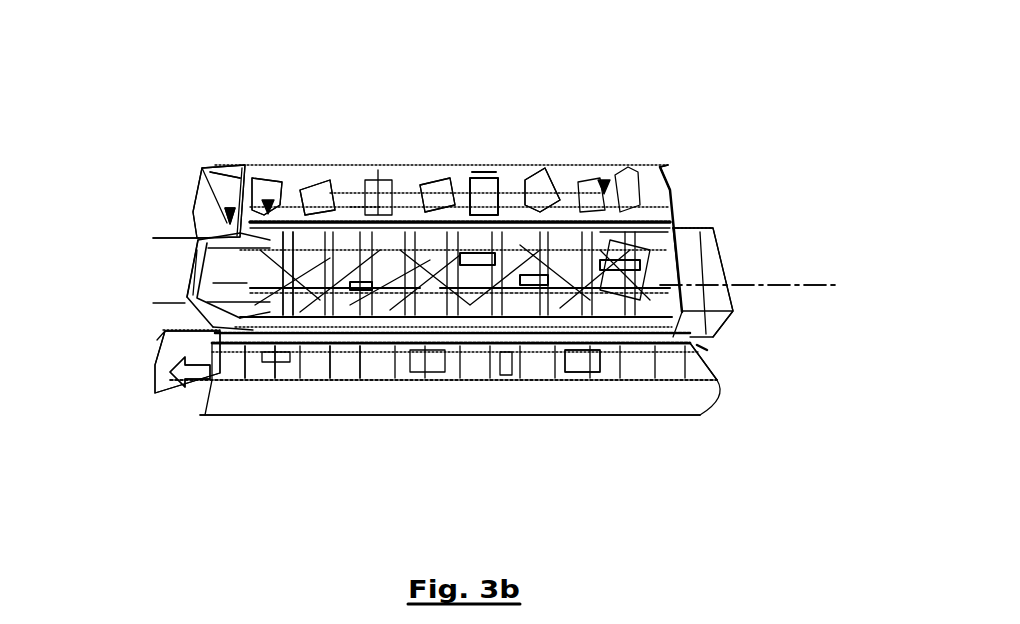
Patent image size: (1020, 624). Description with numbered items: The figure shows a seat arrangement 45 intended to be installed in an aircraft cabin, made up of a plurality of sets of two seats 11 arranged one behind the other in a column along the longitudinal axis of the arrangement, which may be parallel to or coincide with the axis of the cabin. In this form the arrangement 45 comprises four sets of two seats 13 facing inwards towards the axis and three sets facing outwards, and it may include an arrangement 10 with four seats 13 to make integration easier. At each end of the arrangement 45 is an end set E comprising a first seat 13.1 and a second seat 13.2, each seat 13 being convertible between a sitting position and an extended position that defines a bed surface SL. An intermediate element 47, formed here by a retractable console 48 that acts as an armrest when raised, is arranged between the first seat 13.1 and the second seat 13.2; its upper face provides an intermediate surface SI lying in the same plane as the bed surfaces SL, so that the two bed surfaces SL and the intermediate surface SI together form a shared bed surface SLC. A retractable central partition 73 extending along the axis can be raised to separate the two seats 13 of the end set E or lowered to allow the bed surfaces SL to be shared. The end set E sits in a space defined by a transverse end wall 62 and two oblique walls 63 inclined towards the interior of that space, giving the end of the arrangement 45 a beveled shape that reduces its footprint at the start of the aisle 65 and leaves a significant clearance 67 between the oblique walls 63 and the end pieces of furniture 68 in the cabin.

The arrangement with four seats 10 is at (473, 313).
The set of two seats 11 is at (420, 178).
The seat 13 is at (337, 377).
The first seat 13.1 is at (312, 178).
The second seat 13.2 is at (250, 333).
The arrangement of seats 45 is at (277, 105).
The intermediate element 47 is at (213, 333).
The console 48 is at (198, 267).
The end wall 62 is at (183, 282).
The oblique wall 63 is at (203, 222).
The aisle 65 is at (500, 178).
The clearance 67 is at (268, 163).
The end pieces of furniture 68 is at (173, 360).
The retractable central partition 73 is at (573, 310).
The end set E is at (217, 170).
The bed surface SL is at (248, 218).
The shared bed surface SLC is at (200, 247).
The intermediate surface SI is at (362, 178).